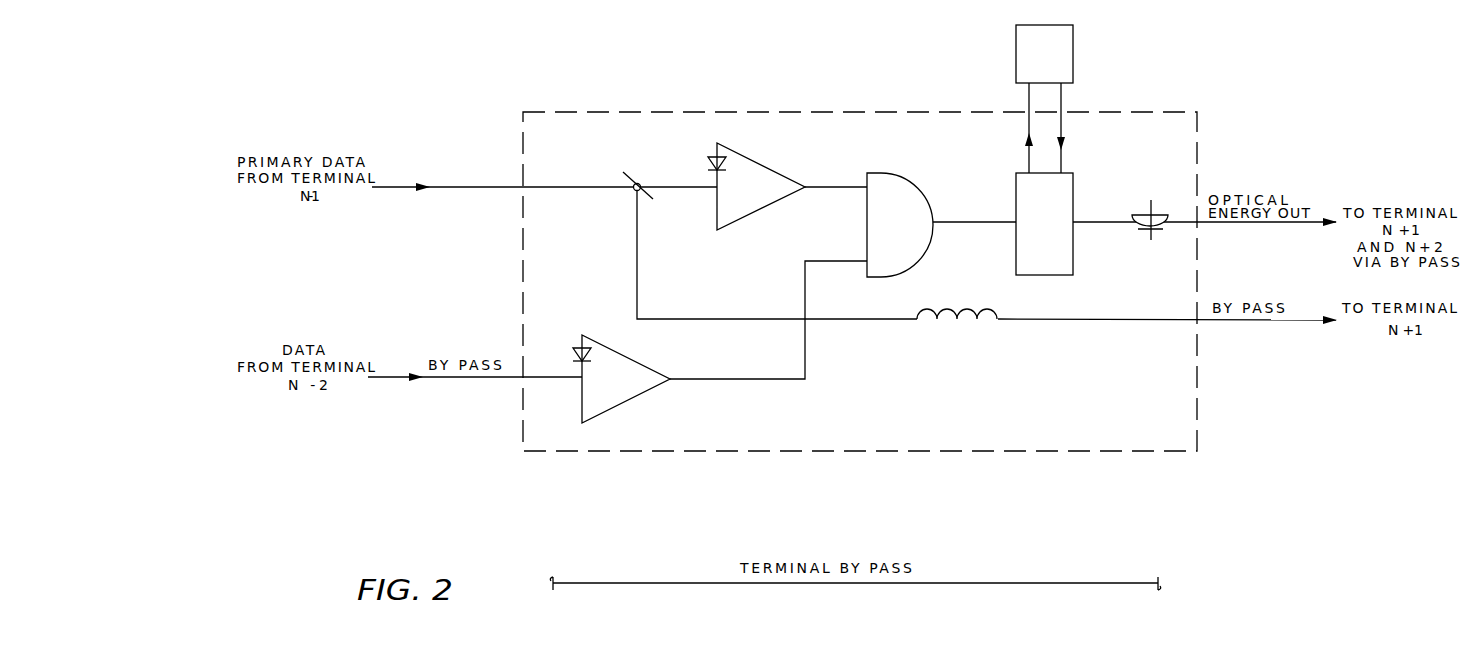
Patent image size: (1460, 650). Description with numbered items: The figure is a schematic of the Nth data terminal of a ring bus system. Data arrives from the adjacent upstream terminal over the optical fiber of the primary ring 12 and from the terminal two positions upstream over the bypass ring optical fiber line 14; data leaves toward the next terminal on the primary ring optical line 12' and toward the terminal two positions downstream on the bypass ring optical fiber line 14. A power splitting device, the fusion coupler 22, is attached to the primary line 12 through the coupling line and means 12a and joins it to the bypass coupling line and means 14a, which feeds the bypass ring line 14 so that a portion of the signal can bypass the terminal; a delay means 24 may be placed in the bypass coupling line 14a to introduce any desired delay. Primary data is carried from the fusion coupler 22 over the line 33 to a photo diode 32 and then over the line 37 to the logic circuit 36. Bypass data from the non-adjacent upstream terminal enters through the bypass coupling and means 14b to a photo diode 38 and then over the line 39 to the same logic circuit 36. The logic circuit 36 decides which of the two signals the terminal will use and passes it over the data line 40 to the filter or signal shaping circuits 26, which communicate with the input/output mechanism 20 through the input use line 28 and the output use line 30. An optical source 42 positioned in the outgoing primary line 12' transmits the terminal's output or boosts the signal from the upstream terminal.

The primary ring optical fiber 12 is at (447, 202).
The coupling line and means 12a is at (560, 188).
The fusion coupler 22 is at (633, 170).
The line 33 is at (673, 188).
The photo diode 32 is at (764, 152).
The line 37 is at (830, 187).
The logic circuit 36 is at (910, 233).
The data line 40 is at (988, 222).
The filter or signal shaping circuits 26 is at (1060, 230).
The input/output mechanism 20 is at (1060, 60).
The input use line 28 is at (1027, 132).
The output use line 30 is at (1063, 128).
The primary ring optical line 12' is at (1205, 236).
The optical source 42 is at (1143, 245).
The bypass ring optical fiber line 14 is at (465, 378).
The bypass coupling and means 14b is at (548, 377).
The photo diode 38 is at (648, 403).
The line 39 is at (777, 380).
The bypass coupling line and means 14a is at (713, 318).
The delay means 24 is at (946, 333).